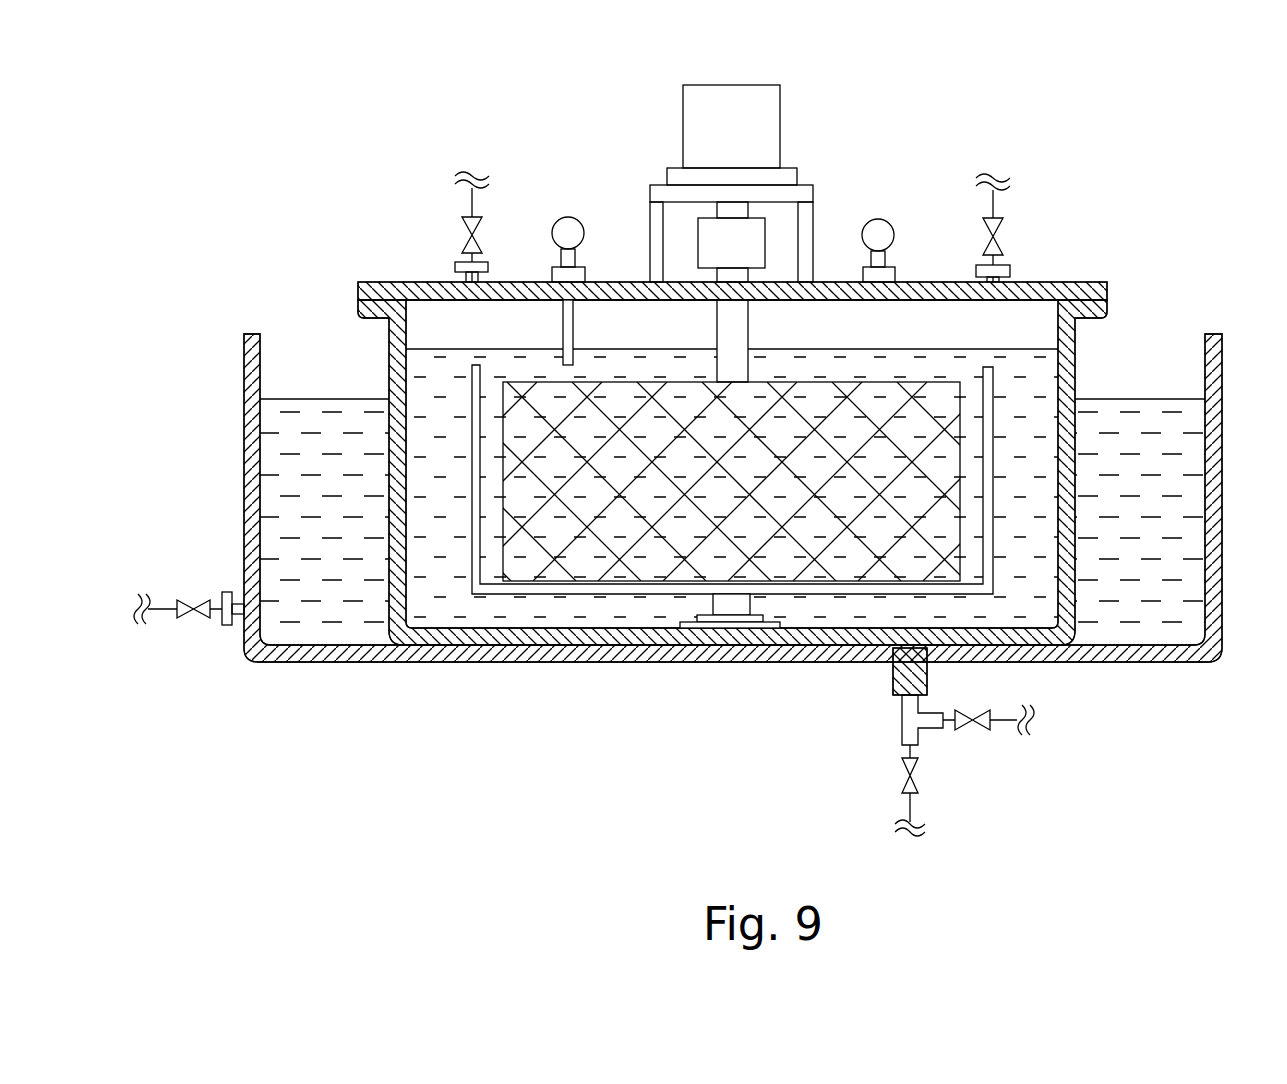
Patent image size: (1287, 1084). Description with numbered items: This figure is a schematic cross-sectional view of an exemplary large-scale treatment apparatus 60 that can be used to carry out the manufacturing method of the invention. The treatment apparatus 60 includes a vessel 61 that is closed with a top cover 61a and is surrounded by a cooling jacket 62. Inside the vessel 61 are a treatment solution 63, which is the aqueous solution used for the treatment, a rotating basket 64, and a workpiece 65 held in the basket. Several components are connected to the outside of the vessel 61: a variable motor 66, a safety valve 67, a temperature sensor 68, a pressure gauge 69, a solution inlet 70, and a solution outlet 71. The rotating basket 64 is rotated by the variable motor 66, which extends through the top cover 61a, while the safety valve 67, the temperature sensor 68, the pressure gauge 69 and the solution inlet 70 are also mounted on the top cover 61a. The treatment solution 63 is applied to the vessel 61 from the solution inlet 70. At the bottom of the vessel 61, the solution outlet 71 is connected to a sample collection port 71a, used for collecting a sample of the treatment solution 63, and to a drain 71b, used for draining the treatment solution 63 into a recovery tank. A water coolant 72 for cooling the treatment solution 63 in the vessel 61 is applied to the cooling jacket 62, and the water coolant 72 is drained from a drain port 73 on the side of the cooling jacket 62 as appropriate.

The treatment apparatus 60 is at (158, 140).
The vessel 61 is at (358, 303).
The top cover 61a is at (395, 282).
The cooling jacket 62 is at (1221, 389).
The treatment solution 63 is at (1048, 362).
The rotating basket 64 is at (995, 398).
The workpiece 65 is at (838, 382).
The variable motor 66 is at (780, 145).
The safety valve 67 is at (480, 222).
The temperature sensor 68 is at (584, 222).
The pressure gauge 69 is at (890, 222).
The solution inlet 70 is at (1000, 222).
The solution outlet 71 is at (893, 686).
The sample collection port 71a is at (985, 735).
The drain 71b is at (903, 772).
The water coolant 72 is at (1195, 445).
The drain port 73 is at (182, 622).